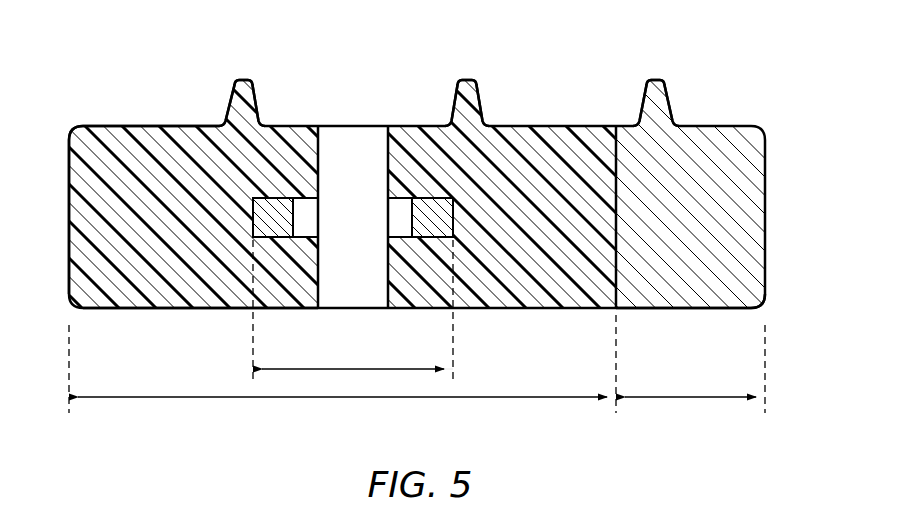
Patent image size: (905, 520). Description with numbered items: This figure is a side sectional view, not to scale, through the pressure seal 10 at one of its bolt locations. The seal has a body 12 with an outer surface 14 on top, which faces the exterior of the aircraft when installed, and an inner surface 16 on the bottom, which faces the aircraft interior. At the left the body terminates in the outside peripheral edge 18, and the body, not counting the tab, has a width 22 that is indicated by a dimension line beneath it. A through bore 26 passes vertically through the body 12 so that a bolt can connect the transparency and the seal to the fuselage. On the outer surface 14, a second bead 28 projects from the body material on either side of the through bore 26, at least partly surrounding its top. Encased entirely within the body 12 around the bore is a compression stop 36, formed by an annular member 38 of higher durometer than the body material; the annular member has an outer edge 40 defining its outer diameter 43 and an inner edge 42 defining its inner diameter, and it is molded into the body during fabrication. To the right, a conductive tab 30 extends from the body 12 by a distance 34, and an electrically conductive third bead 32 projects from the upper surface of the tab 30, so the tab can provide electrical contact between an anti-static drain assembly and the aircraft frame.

The pressure seal 10 is at (734, 62).
The body 12 is at (95, 180).
The outer surface 14 is at (113, 123).
The inner surface 16 is at (183, 311).
The outside peripheral edge 18 is at (66, 218).
The width 22 is at (470, 398).
The through bore 26 is at (355, 297).
The second bead 28 is at (240, 79).
The conductive tab 30 is at (668, 312).
The third bead 32 is at (654, 79).
The distance 34 is at (685, 398).
The compression stop 36 is at (331, 131).
The annular member 38 is at (430, 208).
The outer edge 40 is at (459, 228).
The inner edge 42 is at (408, 212).
The outer diameter 43 is at (370, 369).